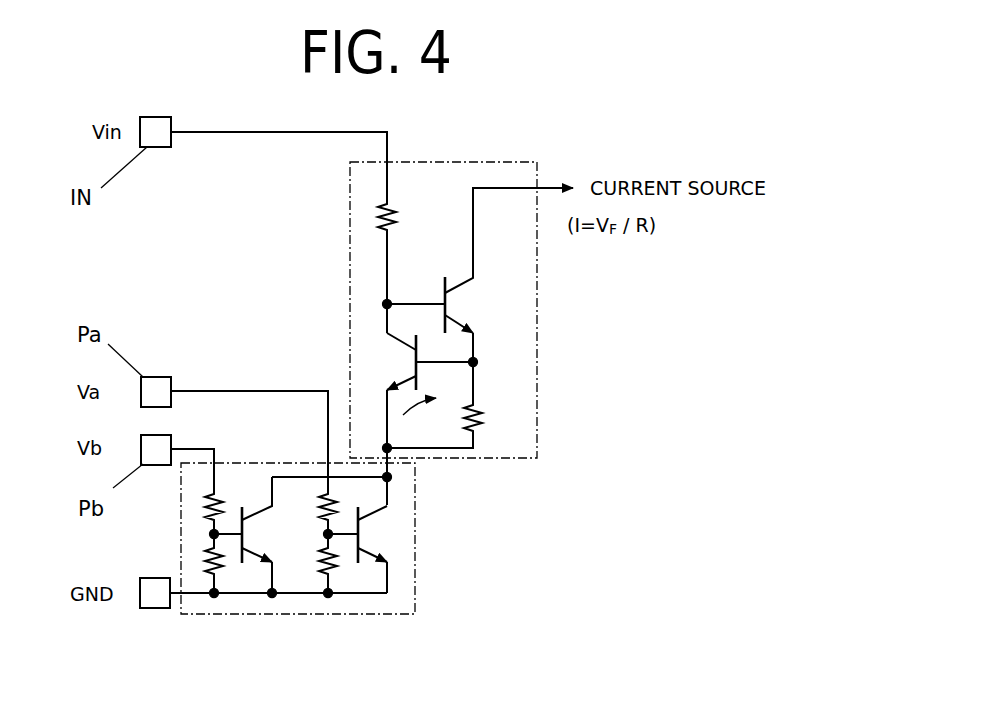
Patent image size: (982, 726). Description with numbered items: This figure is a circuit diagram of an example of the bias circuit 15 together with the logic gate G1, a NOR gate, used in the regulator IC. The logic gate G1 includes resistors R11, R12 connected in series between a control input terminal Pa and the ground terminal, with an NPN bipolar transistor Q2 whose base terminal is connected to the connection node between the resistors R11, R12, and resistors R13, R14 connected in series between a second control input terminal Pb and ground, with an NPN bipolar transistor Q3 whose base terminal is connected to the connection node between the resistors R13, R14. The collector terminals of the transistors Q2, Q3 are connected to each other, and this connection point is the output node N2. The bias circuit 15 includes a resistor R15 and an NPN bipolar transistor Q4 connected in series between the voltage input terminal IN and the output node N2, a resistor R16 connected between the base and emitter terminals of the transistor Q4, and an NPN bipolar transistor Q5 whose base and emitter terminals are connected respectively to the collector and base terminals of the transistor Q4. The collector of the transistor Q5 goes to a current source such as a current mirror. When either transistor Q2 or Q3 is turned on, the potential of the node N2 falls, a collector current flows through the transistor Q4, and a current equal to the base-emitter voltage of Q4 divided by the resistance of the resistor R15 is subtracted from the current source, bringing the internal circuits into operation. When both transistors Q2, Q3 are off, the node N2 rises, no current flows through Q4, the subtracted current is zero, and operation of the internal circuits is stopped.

The bias circuit 15 is at (537, 325).
The logic gate G1 is at (415, 573).
The output node N2 is at (392, 481).
The NPN bipolar transistor Q2 is at (368, 549).
The NPN bipolar transistor Q3 is at (253, 535).
The NPN bipolar transistor Q4 is at (416, 361).
The NPN bipolar transistor Q5 is at (480, 275).
The resistor R11 is at (306, 502).
The resistor R12 is at (306, 557).
The resistor R13 is at (233, 499).
The resistor R14 is at (233, 557).
The resistor R15 is at (411, 224).
The resistor R16 is at (454, 405).